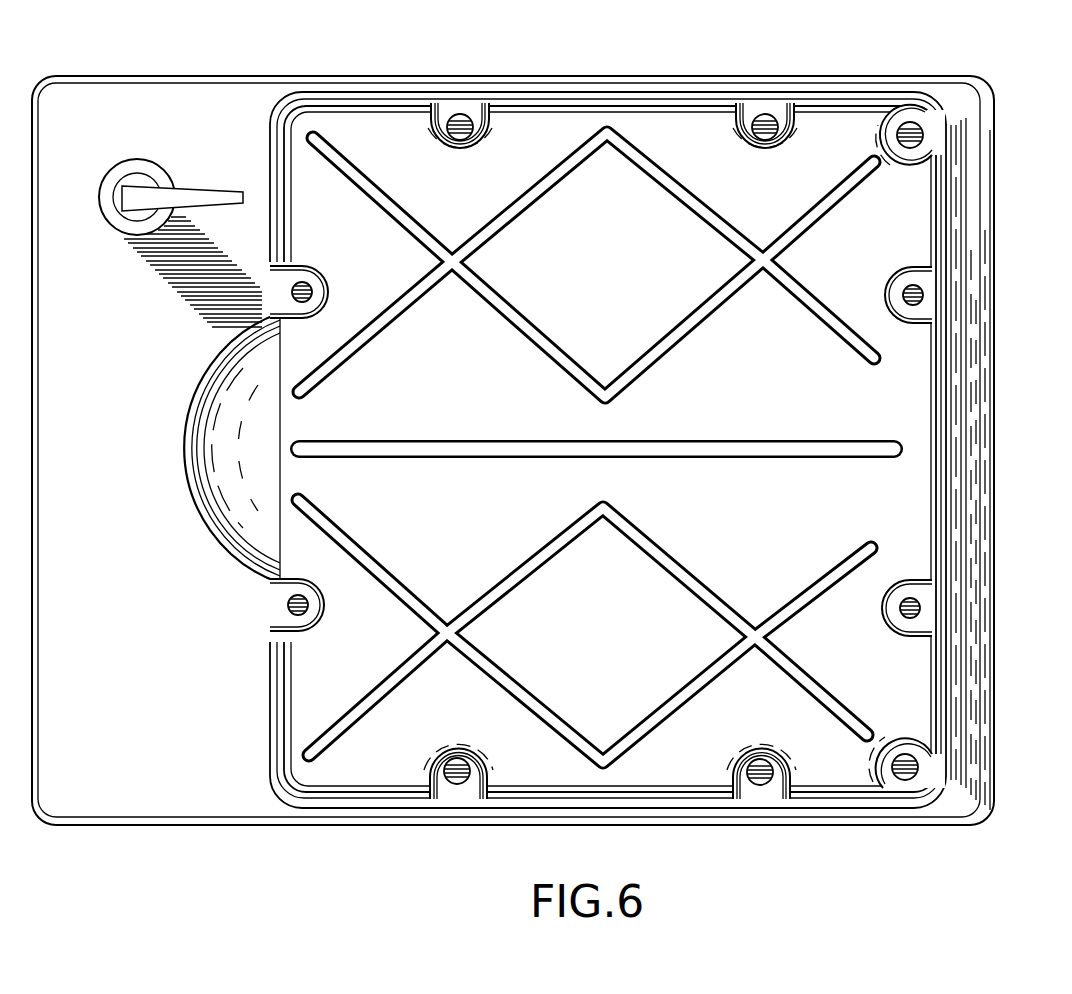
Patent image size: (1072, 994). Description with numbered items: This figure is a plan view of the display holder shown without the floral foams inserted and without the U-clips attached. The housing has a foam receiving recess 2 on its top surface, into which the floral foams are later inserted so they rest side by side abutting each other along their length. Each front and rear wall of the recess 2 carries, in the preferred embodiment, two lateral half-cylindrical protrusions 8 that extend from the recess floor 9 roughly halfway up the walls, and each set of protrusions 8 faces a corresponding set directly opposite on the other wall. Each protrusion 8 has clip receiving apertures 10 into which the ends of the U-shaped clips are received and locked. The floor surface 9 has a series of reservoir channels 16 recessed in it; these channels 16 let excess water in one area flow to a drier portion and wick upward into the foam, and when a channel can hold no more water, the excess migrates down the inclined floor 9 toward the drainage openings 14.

The foam receiving recess 2 is at (515, 147).
The recess floor 9 is at (428, 367).
The reservoir channels 16 is at (808, 305).
The drainage openings 14 is at (915, 133).
The lateral half-cylindrical protrusions 8 is at (927, 598).
The clip receiving apertures 10 is at (920, 612).